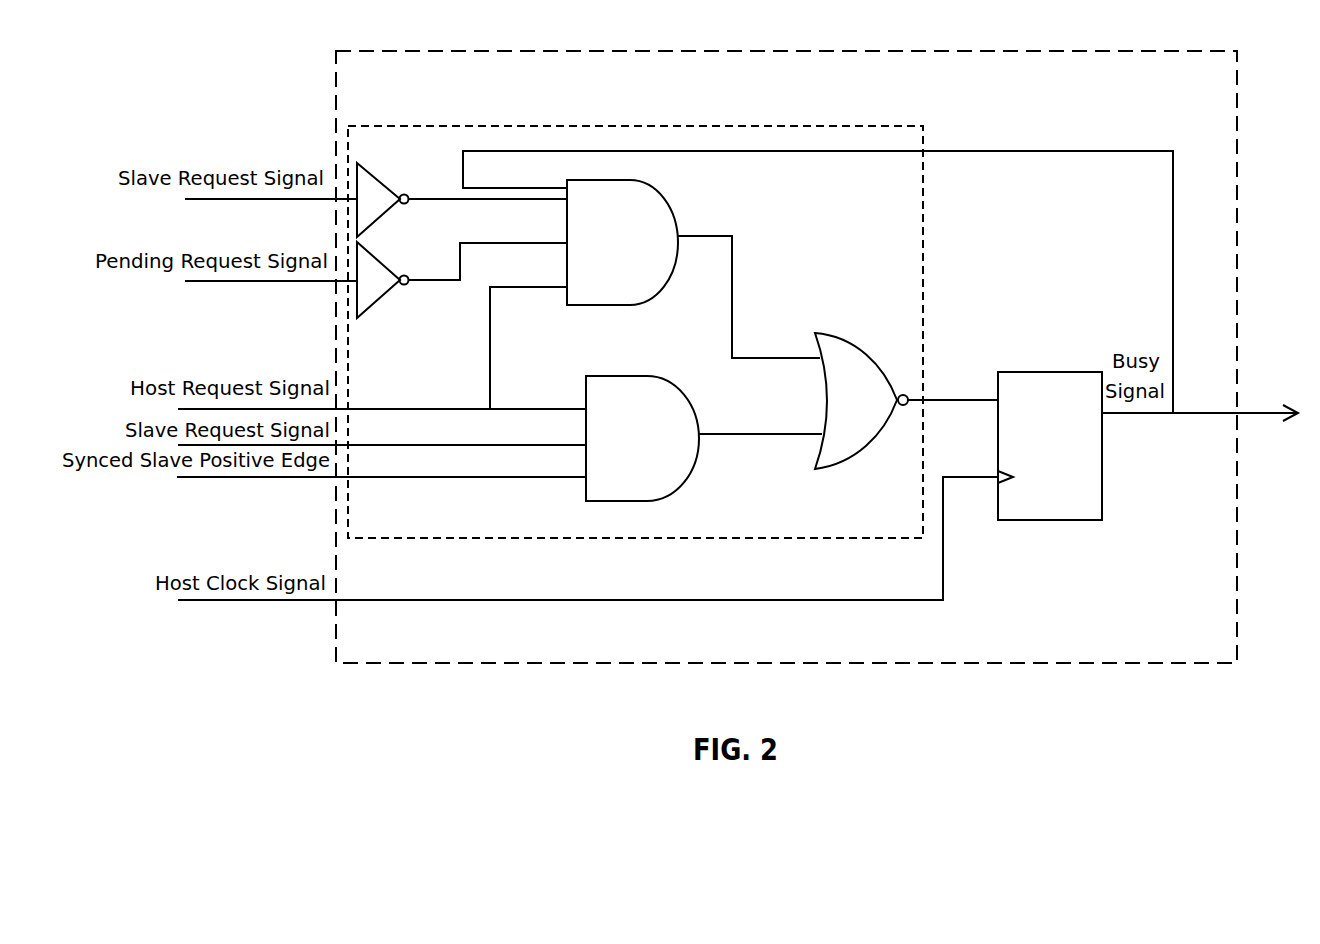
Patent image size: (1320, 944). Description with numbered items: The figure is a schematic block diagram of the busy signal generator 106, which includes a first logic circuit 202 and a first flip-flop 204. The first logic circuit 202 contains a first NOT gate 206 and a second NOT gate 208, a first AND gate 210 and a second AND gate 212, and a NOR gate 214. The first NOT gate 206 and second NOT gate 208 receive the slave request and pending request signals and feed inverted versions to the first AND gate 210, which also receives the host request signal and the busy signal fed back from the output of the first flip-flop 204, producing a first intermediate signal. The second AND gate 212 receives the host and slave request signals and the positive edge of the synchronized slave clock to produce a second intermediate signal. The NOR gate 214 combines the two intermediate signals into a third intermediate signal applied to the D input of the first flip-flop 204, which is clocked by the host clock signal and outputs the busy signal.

The busy signal generator 106 is at (420, 664).
The first logic circuit 202 is at (606, 126).
The first flip-flop 204 is at (1032, 372).
The first NOT gate 206 is at (373, 175).
The second NOT gate 208 is at (380, 262).
The first AND gate 210 is at (663, 193).
The second AND gate 212 is at (623, 373).
The NOR gate 214 is at (833, 335).